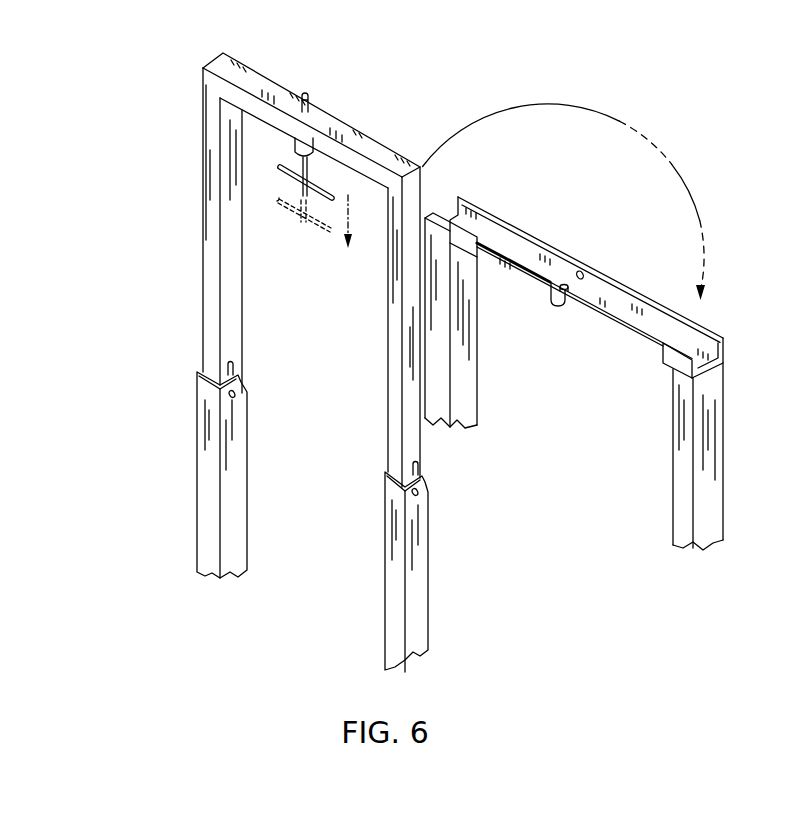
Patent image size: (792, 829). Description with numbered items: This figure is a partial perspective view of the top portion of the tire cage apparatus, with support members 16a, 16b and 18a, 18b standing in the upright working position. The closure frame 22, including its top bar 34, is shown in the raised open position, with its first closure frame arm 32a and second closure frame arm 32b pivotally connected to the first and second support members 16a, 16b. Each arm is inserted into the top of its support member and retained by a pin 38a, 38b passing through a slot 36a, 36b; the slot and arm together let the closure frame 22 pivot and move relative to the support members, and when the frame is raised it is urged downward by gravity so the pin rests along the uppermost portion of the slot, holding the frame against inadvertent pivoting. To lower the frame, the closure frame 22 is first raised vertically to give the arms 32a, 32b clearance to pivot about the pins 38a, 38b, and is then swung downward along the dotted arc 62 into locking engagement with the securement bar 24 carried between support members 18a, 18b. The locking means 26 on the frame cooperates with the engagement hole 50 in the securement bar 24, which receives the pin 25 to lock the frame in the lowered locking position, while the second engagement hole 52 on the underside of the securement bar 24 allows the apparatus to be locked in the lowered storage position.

The closure frame 22 is at (398, 143).
The top cross bar of frame 34 is at (263, 88).
The pin 25 is at (308, 92).
The locking means 26 is at (270, 142).
The first closure frame arm 32a is at (207, 277).
The second closure frame arm 32b is at (393, 378).
The slot 36a is at (235, 371).
The slot 36b is at (422, 468).
The attachment pin 38a is at (235, 397).
The locking pin 38b is at (418, 500).
The first support member 16a is at (208, 450).
The second support member 16b is at (412, 585).
The securement bar 24 is at (719, 316).
The engagement hole 50 is at (583, 270).
The second engagement hole 52 is at (553, 295).
The support member 18a is at (460, 355).
The support member 18b is at (690, 492).
The dotted arc 62 is at (580, 105).